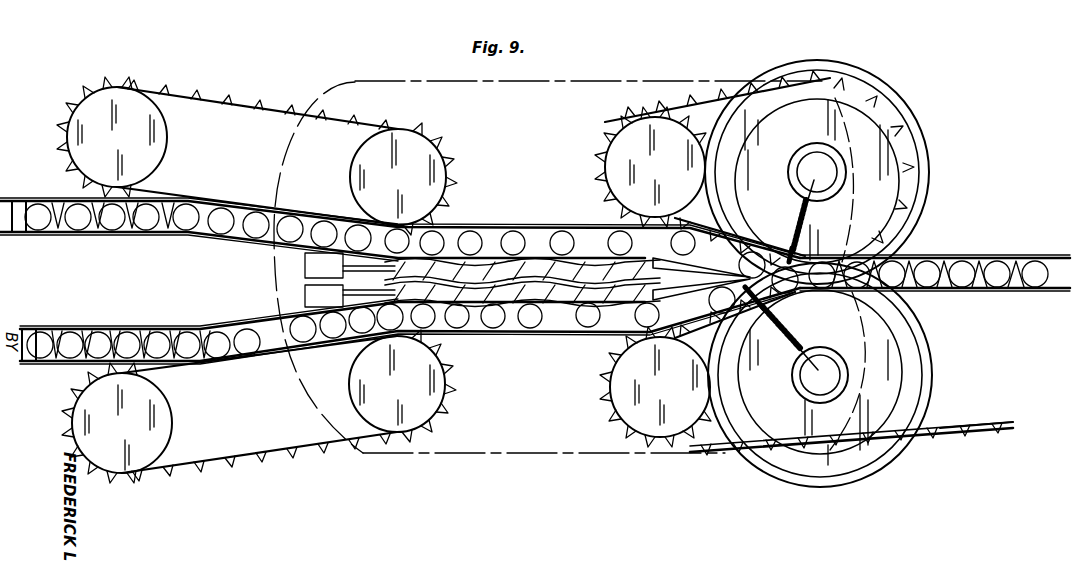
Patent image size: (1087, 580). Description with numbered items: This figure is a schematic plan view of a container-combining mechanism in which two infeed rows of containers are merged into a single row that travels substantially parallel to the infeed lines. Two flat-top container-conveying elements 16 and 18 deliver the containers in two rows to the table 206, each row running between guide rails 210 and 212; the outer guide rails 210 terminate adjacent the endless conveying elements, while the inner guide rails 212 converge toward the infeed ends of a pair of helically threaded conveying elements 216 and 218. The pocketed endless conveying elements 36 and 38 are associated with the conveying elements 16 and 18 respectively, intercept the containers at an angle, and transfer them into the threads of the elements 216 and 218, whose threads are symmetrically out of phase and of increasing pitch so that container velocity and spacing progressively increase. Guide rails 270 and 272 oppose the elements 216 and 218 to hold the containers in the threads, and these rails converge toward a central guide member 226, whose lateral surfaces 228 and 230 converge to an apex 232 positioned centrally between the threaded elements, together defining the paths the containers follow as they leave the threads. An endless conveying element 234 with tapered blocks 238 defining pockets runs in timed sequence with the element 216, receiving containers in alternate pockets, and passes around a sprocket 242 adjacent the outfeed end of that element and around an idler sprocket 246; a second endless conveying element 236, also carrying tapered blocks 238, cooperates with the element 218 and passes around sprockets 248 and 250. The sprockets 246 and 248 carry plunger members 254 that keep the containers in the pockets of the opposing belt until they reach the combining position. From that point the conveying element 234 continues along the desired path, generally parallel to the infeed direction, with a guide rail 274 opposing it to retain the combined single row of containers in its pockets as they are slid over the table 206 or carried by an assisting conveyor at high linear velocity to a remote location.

The endless conveying element 38 is at (240, 100).
The endless conveying element 36 is at (246, 462).
The guide rail 210 is at (22, 200).
The flat-top container conveying element 18 is at (66, 234).
The flat-top container conveying element 16 is at (68, 328).
The guide rail 212 is at (95, 236).
The helically threaded conveying element 218 is at (540, 226).
The helically threaded conveying element 216 is at (560, 323).
The guide rail 272 is at (488, 225).
The guide rail 270 is at (500, 338).
The guide rail 274 is at (965, 256).
The table 206 is at (455, 456).
The tapered blocks 238 is at (600, 160).
The sprocket 250 is at (618, 130).
The guide member 226 is at (577, 428).
The sprocket 242 is at (690, 448).
The endless conveying element 234 is at (942, 440).
The lateral surface 230 is at (722, 238).
The endless conveying element 236 is at (930, 125).
The sprocket 248 is at (920, 170).
The plunger members 254 is at (804, 218).
The lateral surface 228 is at (705, 320).
The idler sprocket 246 is at (905, 375).
The apex 232 is at (790, 300).